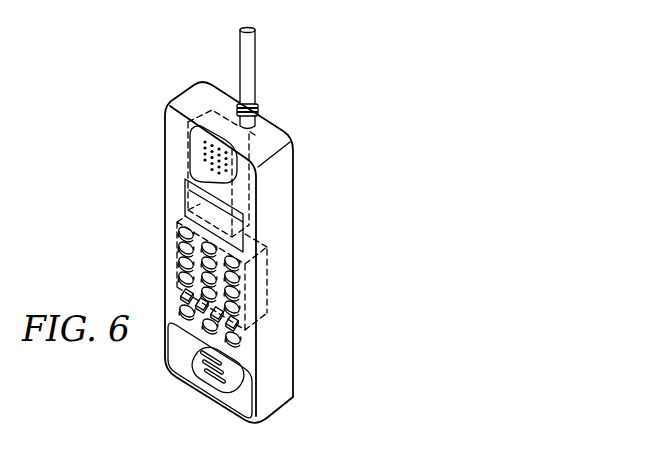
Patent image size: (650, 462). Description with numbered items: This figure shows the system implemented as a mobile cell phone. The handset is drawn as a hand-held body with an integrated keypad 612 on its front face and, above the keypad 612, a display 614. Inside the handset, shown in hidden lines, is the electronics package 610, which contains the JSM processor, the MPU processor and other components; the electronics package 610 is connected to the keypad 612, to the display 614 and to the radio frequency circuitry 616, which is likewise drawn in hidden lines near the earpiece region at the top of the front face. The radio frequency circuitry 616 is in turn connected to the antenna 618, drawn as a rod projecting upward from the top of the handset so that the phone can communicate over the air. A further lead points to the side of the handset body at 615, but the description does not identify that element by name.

The electronics package 610 is at (267, 289).
The keypad 612 is at (186, 266).
The display 614 is at (184, 206).
The housing 615 is at (283, 368).
The radio frequency (RF) circuitry 616 is at (188, 170).
The antenna 618 is at (257, 57).